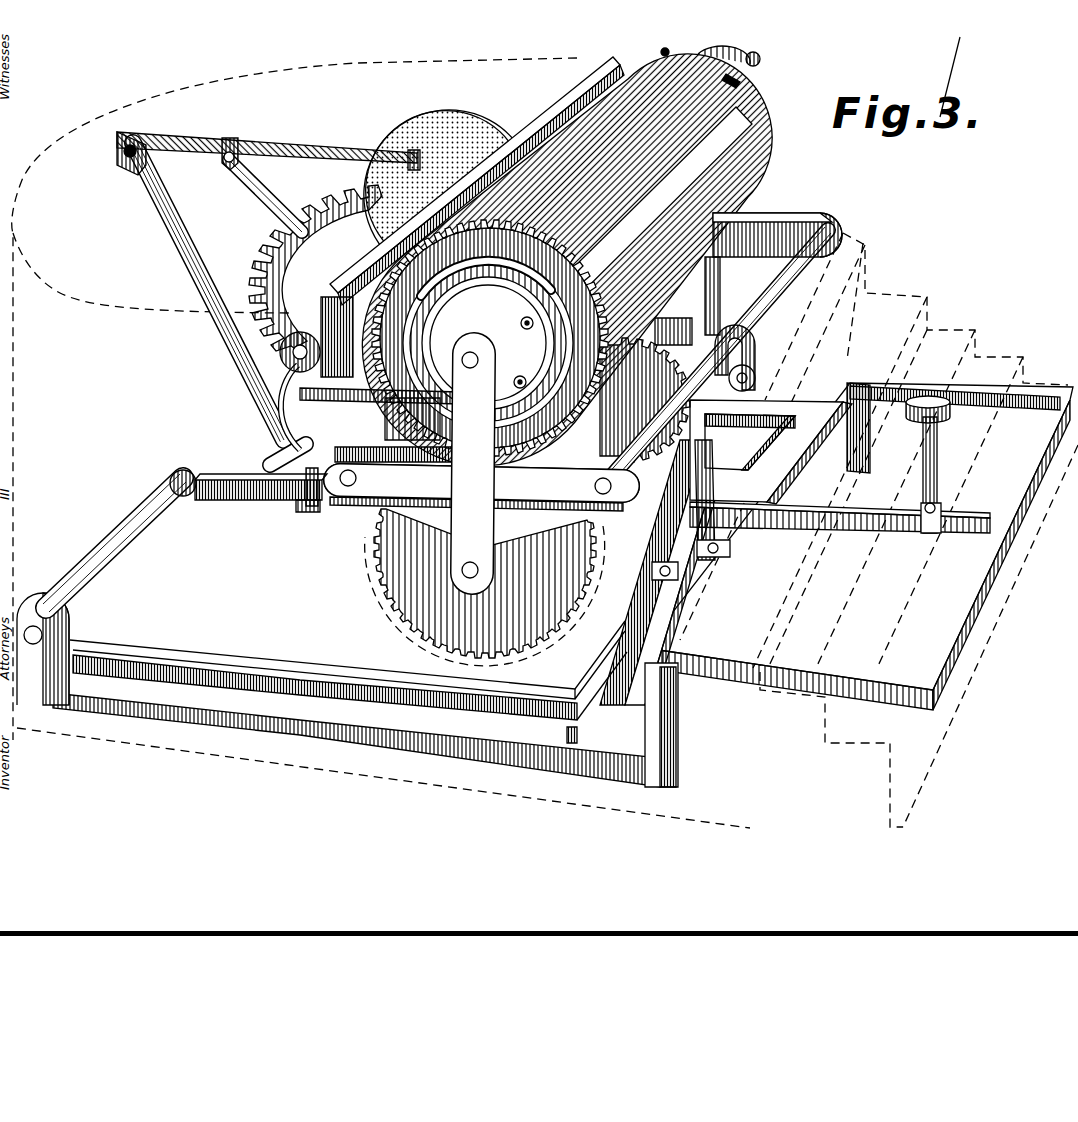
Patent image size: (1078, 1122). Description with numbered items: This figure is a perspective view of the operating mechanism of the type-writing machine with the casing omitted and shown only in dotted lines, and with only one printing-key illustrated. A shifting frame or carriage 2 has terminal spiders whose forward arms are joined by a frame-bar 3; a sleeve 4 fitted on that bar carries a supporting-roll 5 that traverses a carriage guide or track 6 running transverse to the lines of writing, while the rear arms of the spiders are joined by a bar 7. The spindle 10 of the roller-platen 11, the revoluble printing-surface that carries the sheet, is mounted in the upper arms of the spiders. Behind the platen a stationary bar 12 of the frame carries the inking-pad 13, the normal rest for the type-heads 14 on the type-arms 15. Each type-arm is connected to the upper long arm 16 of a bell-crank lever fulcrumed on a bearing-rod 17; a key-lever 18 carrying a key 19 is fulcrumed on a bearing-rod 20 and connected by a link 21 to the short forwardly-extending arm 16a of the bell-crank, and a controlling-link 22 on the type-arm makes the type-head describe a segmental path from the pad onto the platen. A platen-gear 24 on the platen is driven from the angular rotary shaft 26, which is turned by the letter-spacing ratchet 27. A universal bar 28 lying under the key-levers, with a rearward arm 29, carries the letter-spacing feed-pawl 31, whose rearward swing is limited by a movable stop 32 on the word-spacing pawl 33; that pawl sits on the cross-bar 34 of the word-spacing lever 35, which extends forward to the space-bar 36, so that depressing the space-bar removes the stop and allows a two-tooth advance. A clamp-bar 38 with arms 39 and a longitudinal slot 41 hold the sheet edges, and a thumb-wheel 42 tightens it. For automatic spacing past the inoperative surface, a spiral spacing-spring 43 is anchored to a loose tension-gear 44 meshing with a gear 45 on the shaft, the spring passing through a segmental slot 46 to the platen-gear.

The shifting frame or carriage 2 is at (780, 215).
The frame-bar 3 is at (830, 230).
The sleeve 4 is at (727, 328).
The supporting-roll 5 is at (757, 386).
The carriage guide or track 6 is at (866, 253).
The bar 7 is at (382, 425).
The spindle 10 is at (481, 465).
The roller-platen 11 is at (772, 120).
The stationary bar 12 is at (592, 62).
The inking-pad 13 is at (458, 125).
The type-heads 14 is at (405, 150).
The type-arms 15 is at (307, 140).
The upper long arms of bell-crank levers 16 is at (172, 247).
The short forwardly-extending arms of bell-crank levers 16a is at (300, 513).
The bearing-rod 17 is at (270, 462).
The key-levers 18 is at (262, 497).
The keys 19 is at (942, 418).
The bearing-rod 20 is at (112, 548).
The links 21 is at (306, 506).
The controlling-links 22 is at (260, 205).
The platen-gear 24 is at (624, 234).
The rotary shaft 26 is at (666, 332).
The letter-spacing ratchet 27 is at (645, 400).
The universal bar 28 is at (623, 660).
The arm of universal lever 29 is at (312, 672).
The letter-spacing feed-pawl 31 is at (689, 496).
The movable stop 32 is at (665, 562).
The word-spacing pawl 33 is at (697, 545).
The cross-bar 34 is at (580, 680).
The word-spacing lever 35 is at (297, 738).
The space-bar 36 is at (955, 627).
The clamp-bar 38 is at (710, 48).
The arms 39 is at (665, 50).
The longitudinal slot 41 is at (740, 80).
The thumb-wheel 42 is at (750, 52).
The spiral spacing-spring 43 is at (490, 338).
The tension-gear 44 is at (488, 343).
The gear 45 is at (485, 587).
The segmental slot 46 is at (477, 285).